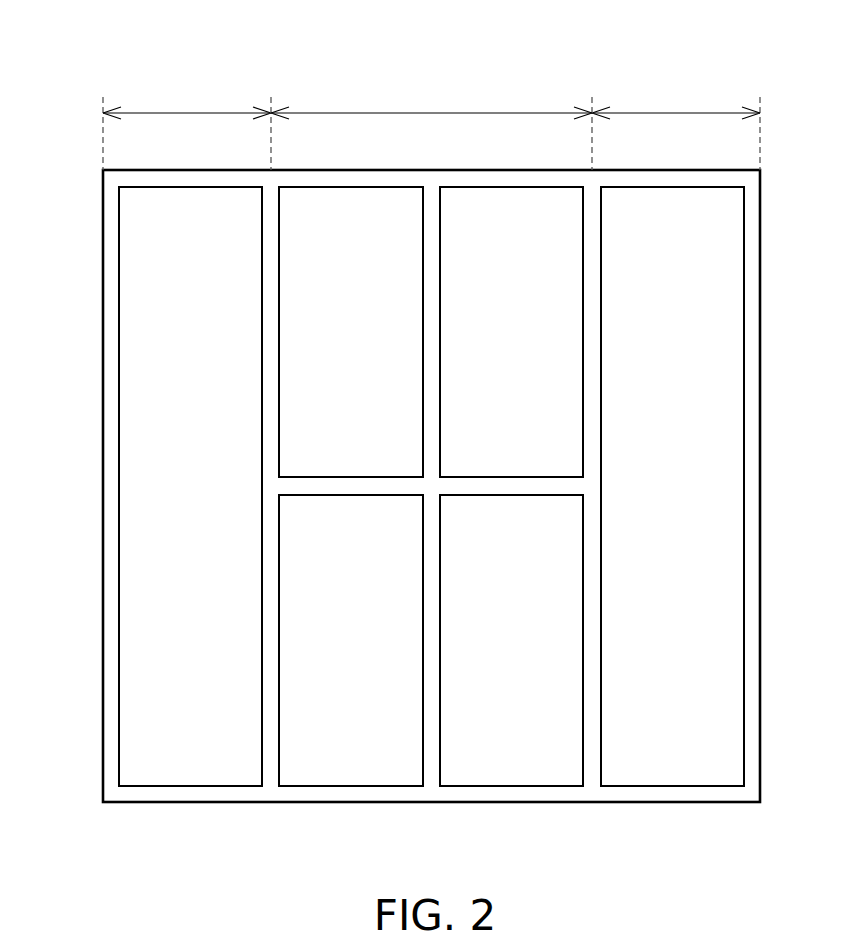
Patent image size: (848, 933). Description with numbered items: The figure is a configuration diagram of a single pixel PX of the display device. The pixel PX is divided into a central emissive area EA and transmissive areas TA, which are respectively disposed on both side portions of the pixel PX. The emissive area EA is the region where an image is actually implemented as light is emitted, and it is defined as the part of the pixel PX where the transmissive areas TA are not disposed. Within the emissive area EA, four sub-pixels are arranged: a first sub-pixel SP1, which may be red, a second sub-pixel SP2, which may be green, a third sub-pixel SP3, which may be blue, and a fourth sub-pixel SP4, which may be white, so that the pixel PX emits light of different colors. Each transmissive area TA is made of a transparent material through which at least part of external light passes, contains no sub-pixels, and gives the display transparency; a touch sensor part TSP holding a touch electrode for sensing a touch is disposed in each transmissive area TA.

The pixel PX is at (103, 195).
The transmissive area TA is at (431, 129).
The emissive area EA is at (431, 129).
The touch sensor part TSP is at (431, 486).
The first sub-pixel SP1 is at (351, 332).
The second sub-pixel SP2 is at (511, 332).
The third sub-pixel SP3 is at (351, 640).
The fourth sub-pixel SP4 is at (511, 640).